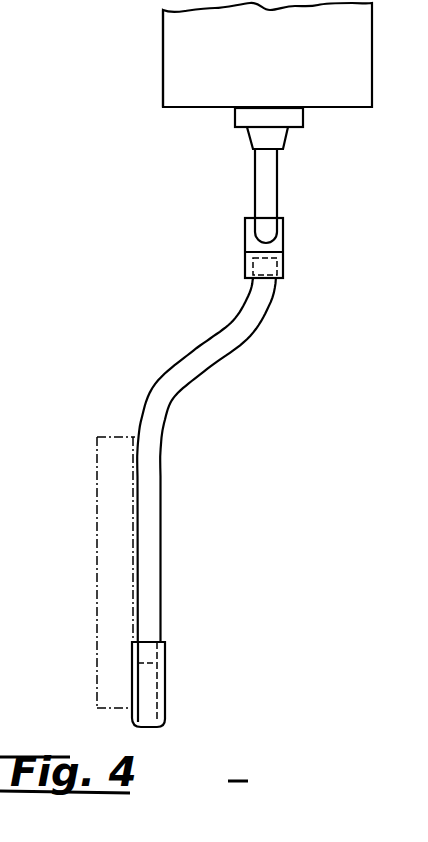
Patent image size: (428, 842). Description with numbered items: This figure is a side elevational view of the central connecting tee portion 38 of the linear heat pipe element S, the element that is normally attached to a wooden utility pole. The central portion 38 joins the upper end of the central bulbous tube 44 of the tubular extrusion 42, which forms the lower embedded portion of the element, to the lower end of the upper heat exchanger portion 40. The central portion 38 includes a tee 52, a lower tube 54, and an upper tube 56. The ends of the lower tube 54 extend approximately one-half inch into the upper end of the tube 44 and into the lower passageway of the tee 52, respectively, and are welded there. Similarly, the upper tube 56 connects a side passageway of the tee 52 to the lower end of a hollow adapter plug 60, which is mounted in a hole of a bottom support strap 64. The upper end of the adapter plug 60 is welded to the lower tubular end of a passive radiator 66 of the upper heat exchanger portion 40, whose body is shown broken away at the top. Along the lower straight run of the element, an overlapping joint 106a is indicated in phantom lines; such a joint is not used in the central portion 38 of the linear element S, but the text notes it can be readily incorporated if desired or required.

The upper heat exchanger portion 40 is at (160, 38).
The passive radiator 66 is at (163, 79).
The linear heat pipe element S is at (123, 172).
The bottom support strap 64 is at (235, 113).
The adapter plug 60 is at (252, 140).
The central connecting tee portion 38 is at (184, 296).
The left upper tube 56 is at (278, 180).
The tee 52 is at (284, 242).
The lower tube 54 is at (217, 370).
The tubular extrusion 42 is at (135, 672).
The central bulbous tube 44 is at (165, 700).
The overlapping joint 106a is at (96, 542).